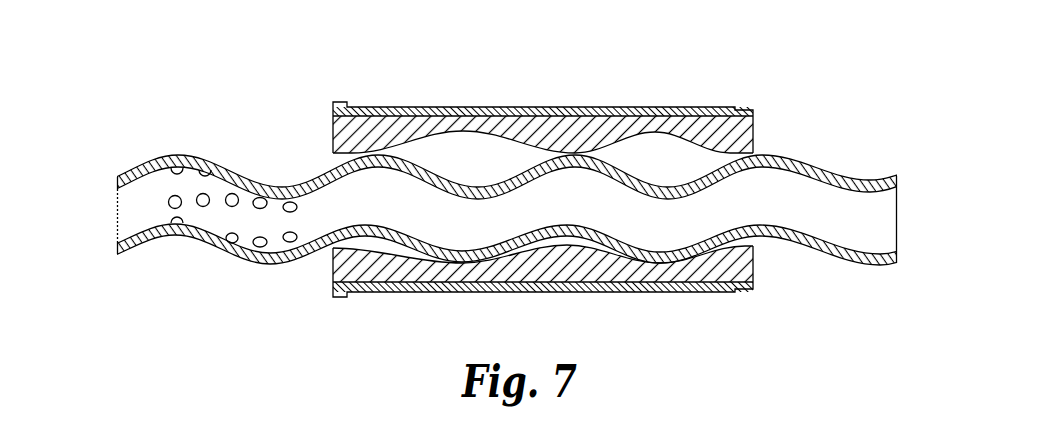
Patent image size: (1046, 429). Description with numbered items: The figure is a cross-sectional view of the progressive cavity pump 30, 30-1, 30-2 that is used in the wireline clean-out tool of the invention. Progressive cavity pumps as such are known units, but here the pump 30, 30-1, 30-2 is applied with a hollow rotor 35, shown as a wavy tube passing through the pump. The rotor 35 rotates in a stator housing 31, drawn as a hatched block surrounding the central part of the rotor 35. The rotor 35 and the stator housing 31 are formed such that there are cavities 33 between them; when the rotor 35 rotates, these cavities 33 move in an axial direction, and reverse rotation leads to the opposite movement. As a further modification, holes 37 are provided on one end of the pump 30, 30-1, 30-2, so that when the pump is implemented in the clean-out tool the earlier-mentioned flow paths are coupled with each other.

The progressive cavity pump 30 is at (515, 176).
The progressive cavity pump 30-1 is at (515, 176).
The progressive cavity pump 30-2 is at (311, 101).
The stator housing 31 is at (565, 130).
The cavities 33 is at (458, 153).
The hollow rotor 35 is at (820, 217).
The holes 37 is at (307, 263).